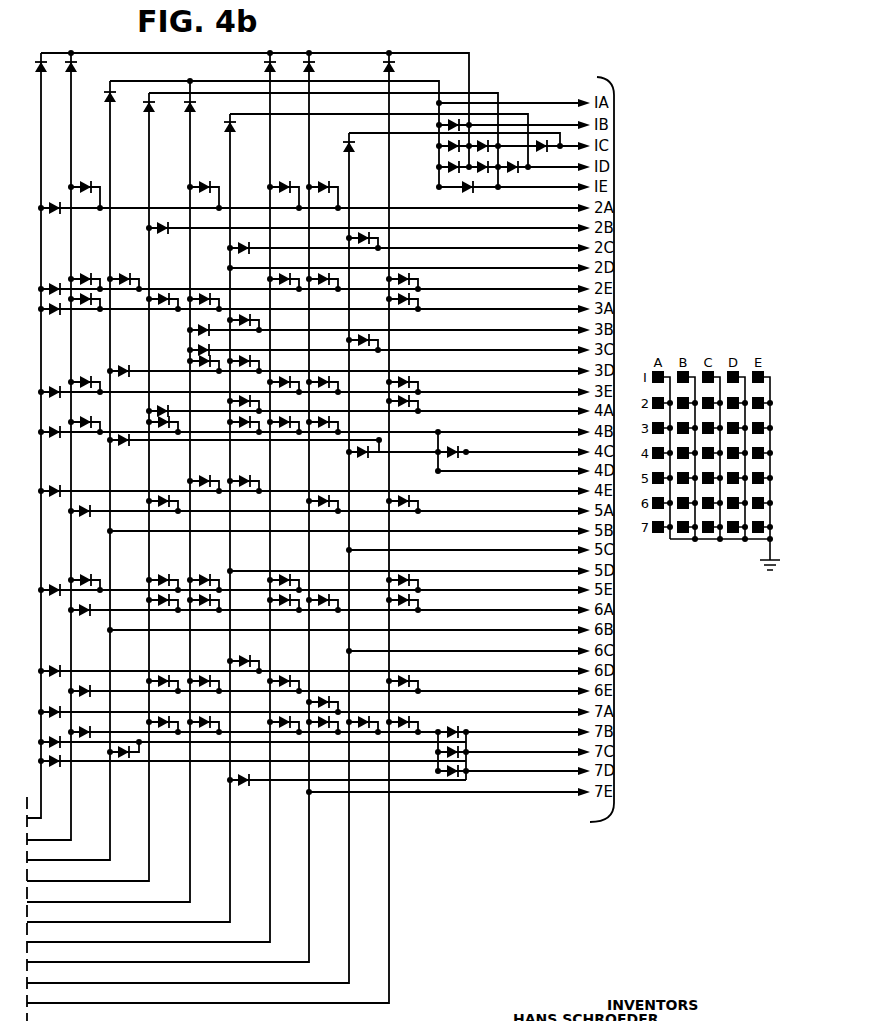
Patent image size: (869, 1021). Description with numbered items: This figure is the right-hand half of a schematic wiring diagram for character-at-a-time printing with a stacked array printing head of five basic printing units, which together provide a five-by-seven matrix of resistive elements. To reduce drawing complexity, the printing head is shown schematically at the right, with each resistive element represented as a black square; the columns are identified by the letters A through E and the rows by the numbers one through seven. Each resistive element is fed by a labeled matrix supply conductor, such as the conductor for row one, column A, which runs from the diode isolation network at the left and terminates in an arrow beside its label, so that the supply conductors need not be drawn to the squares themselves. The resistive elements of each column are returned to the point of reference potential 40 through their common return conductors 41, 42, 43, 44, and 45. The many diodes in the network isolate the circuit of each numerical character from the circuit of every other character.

The point of reference potential 40 is at (770, 573).
The common return conductor 41 is at (669, 540).
The common return conductor 42 is at (694, 541).
The common return conductor 43 is at (719, 541).
The common return conductor 44 is at (744, 541).
The common return conductor 45 is at (771, 540).